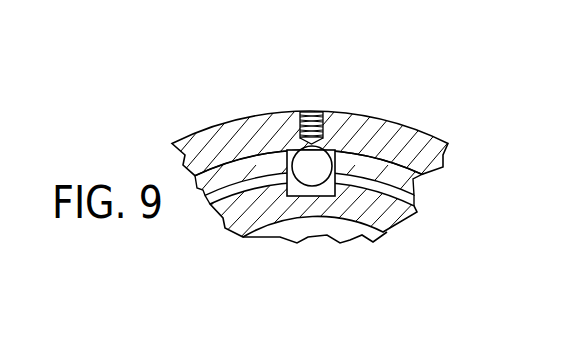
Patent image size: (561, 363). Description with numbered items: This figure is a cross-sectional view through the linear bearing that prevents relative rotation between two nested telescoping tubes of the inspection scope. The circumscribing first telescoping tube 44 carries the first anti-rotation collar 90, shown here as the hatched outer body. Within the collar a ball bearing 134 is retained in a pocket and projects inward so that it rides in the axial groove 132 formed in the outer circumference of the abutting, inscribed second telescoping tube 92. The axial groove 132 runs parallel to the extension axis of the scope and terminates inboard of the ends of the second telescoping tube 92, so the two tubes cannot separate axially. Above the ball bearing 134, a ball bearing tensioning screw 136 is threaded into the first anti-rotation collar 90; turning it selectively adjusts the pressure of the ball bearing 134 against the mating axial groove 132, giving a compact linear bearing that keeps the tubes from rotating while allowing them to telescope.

The first anti-rotation collar 90 is at (357, 112).
The ball bearing tensioning screw 136 is at (319, 111).
The axial groove 132 is at (312, 198).
The ball bearing 134 is at (207, 206).
The first telescoping tube 44 is at (428, 174).
The second telescoping tube 92 is at (403, 228).